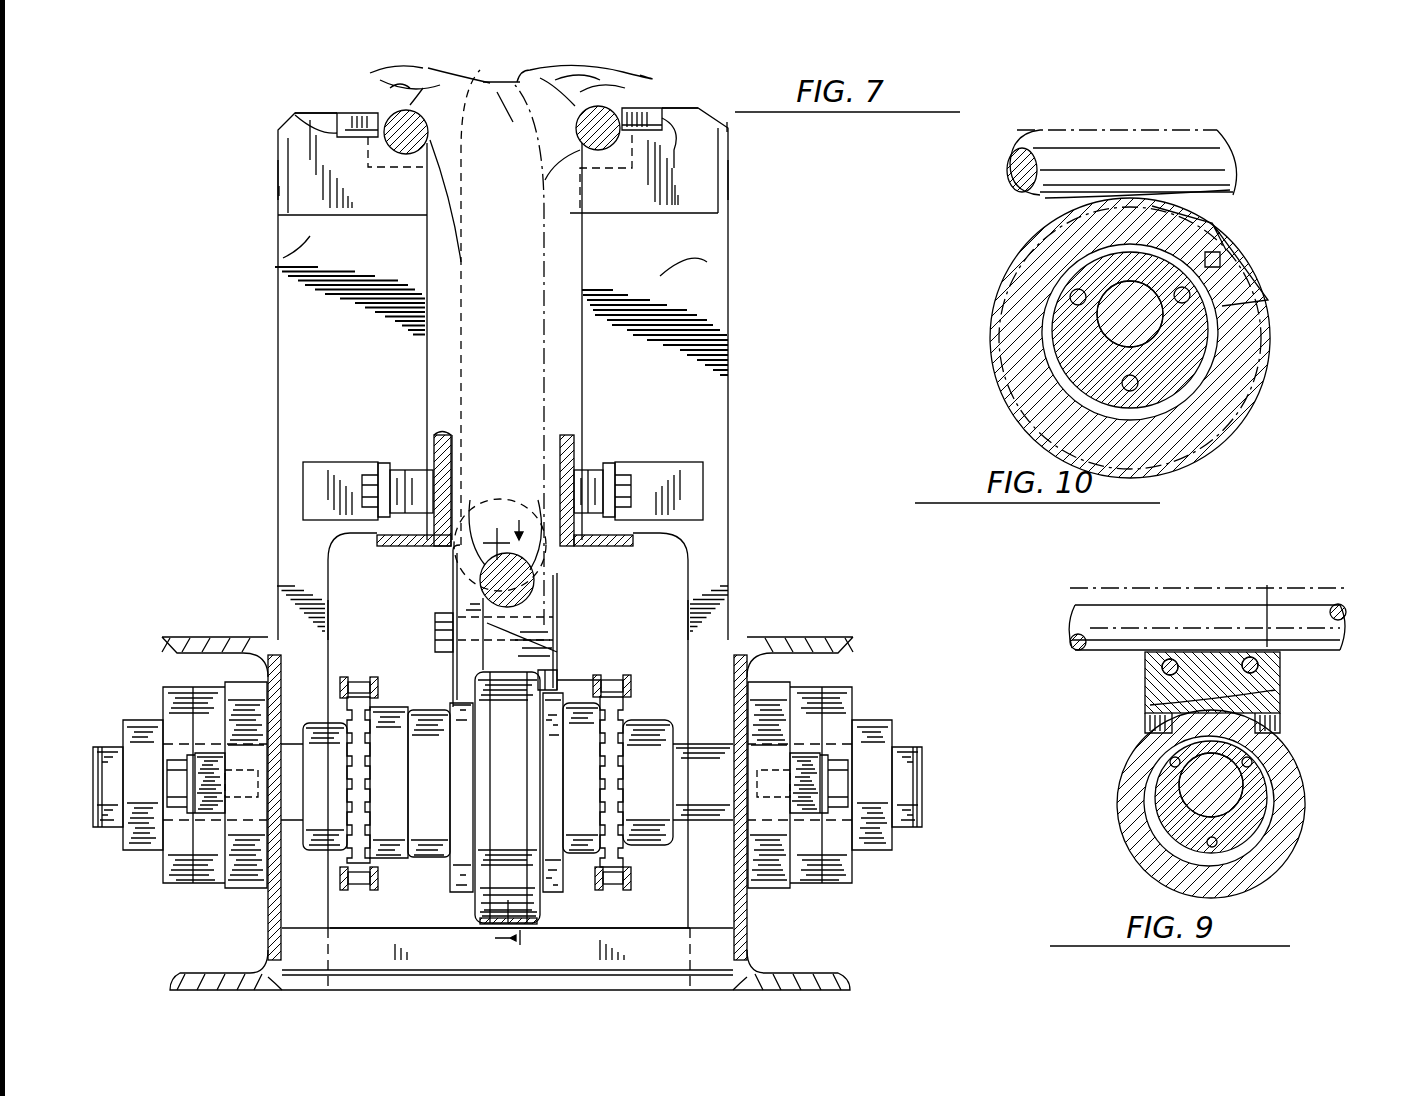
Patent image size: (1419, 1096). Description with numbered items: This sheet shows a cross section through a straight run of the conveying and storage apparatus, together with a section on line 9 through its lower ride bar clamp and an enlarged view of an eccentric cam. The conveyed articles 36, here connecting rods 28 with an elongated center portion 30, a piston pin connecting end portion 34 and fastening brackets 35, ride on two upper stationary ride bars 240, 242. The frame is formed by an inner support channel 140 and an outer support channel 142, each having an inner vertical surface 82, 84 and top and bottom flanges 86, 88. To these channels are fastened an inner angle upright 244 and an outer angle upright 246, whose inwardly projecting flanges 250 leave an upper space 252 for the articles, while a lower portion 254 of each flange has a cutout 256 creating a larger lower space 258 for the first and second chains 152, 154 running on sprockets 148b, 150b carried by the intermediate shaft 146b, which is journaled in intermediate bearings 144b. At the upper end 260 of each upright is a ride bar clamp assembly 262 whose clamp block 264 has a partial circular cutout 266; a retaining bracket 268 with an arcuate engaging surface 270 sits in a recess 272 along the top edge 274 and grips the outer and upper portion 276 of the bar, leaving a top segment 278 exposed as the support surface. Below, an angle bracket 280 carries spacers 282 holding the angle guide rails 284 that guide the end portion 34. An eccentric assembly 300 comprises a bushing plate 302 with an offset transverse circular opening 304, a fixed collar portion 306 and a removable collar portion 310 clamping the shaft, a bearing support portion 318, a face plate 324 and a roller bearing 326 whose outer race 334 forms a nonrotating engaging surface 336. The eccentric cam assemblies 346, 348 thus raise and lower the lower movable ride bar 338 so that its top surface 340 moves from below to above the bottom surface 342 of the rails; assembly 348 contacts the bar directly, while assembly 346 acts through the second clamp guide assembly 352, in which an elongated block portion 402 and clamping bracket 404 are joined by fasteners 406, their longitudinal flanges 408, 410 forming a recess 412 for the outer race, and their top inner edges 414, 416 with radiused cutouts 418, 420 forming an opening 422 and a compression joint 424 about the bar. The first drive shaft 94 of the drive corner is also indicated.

In FIG. 7, the section line 9— 9 is at (511, 740).
In FIG. 7, the automotive connecting rod 28 is at (470, 240).
In FIG. 7, the elongated center portion 30 is at (528, 382).
In FIG. 7, the piston pin connecting end portion 34 is at (505, 535).
In FIG. 7, the fastening bracket 35 is at (515, 117).
In FIG. 7, the article 36 is at (484, 268).
In FIG. 7, the inner vertical surface 82 is at (735, 905).
In FIG. 7, the inner vertical surface 84 is at (285, 910).
In FIG. 7, the top flange 86 is at (795, 640).
In FIG. 7, the bottom flange 88 is at (758, 985).
In FIG. 10, the first drive shaft 94 is at (1107, 312).
In FIG. 7, the inner support channel 140 is at (800, 973).
In FIG. 7, the outer support channel 142 is at (225, 973).
In FIG. 7, the intermediate bearing 144b is at (835, 690).
In FIG. 7, the intermediate shaft 146b is at (920, 775).
In FIG. 9, the intermediate shaft 146b is at (1195, 795).
In FIG. 7, the single chain sprocket 148b is at (630, 860).
In FIG. 7, the single chain sprocket 150b is at (340, 878).
In FIG. 7, the first single chain 152 is at (328, 684).
In FIG. 7, the second single chain 154 is at (640, 680).
In FIG. 7, the ride bar 240 is at (600, 112).
In FIG. 7, the ride bar 242 is at (390, 112).
In FIG. 7, the inner angle upright 244 is at (725, 378).
In FIG. 7, the outer angle upright 246 is at (290, 390).
In FIG. 7, the flange 250 is at (511, 248).
In FIG. 7, the upper space 252 is at (580, 288).
In FIG. 7, the lower portion 254 is at (718, 590).
In FIG. 7, the cutout 256 is at (688, 625).
In FIG. 7, the lower space 258 is at (625, 641).
In FIG. 7, the upper end 260 is at (735, 162).
In FIG. 7, the ride bar clamp assembly 262 is at (278, 192).
In FIG. 7, the clamp block 264 is at (652, 210).
In FIG. 7, the partial circular cutout 266 is at (605, 148).
In FIG. 7, the retaining bracket 268 is at (703, 92).
In FIG. 7, the engaging surface 270 is at (640, 110).
In FIG. 7, the recess 272 is at (674, 152).
In FIG. 7, the top edge 274 is at (692, 108).
In FIG. 7, the outer and upper portion 276 is at (430, 125).
In FIG. 7, the top segment 278 is at (492, 91).
In FIG. 7, the angle bracket 280 is at (675, 468).
In FIG. 7, the spacer 282 is at (592, 470).
In FIG. 7, the angle guide rail 284 is at (480, 440).
In FIG. 7, the eccentric assembly 300 is at (478, 930).
In FIG. 9, the eccentric assembly 300 is at (1190, 790).
In FIG. 7, the bushing plate 302 is at (465, 932).
In FIG. 9, the transverse circular opening 304 is at (1250, 775).
In FIG. 7, the fixed outer semi-circular collar portion 306 is at (370, 860).
In FIG. 7, the removable collar portion 310 is at (415, 725).
In FIG. 9, the circular bearing support portion 318 is at (1260, 800).
In FIG. 7, the circular face plate 324 is at (550, 890).
In FIG. 7, the roller bearing 326 is at (535, 935).
In FIG. 10, the roller bearing 326 is at (1215, 405).
In FIG. 9, the roller bearing 326 is at (1145, 868).
In FIG. 7, the outer race 334 is at (495, 928).
In FIG. 10, the outer race 334 is at (1000, 368).
In FIG. 9, the outer race 334 is at (1292, 858).
In FIG. 10, the nonrotating engaging surface 336 is at (1240, 190).
In FIG. 9, the nonrotating engaging surface 336 is at (1278, 692).
In FIG. 7, the lower movable ride bar 338 is at (495, 540).
In FIG. 10, the lower movable ride bar 338 is at (1210, 160).
In FIG. 9, the lower movable ride bar 338 is at (1345, 618).
In FIG. 7, the top surface 340 is at (512, 500).
In FIG. 7, the bottom surface 342 is at (630, 548).
In FIG. 7, the eccentric cam assembly 346 is at (540, 925).
In FIG. 9, the eccentric cam assembly 346 is at (1275, 882).
In FIG. 10, the eccentric cam assembly 348 is at (1268, 372).
In FIG. 7, the second clamp guide assembly 352 is at (570, 620).
In FIG. 9, the second clamp guide assembly 352 is at (1280, 672).
In FIG. 7, the elongated block portion 402 is at (548, 590).
In FIG. 9, the elongated block portion 402 is at (1212, 682).
In FIG. 7, the clamping bracket 404 is at (453, 672).
In FIG. 7, the fastener 406 is at (450, 617).
In FIG. 9, the fastener 406 is at (1158, 680).
In FIG. 7, the longitudinal flange 408 is at (574, 792).
In FIG. 7, the longitudinal flange 410 is at (445, 700).
In FIG. 9, the longitudinal flange 410 is at (1148, 722).
In FIG. 7, the recess 412 is at (600, 692).
In FIG. 7, the top inner edge 414 is at (540, 560).
In FIG. 7, the top inner edge 416 is at (462, 580).
In FIG. 7, the elongated radiused cutout 418 is at (540, 585).
In FIG. 9, the elongated radiused cutout 418 is at (1145, 655).
In FIG. 7, the elongated radiused cutout 420 is at (455, 612).
In FIG. 7, the opening 422 is at (505, 580).
In FIG. 7, the compression joint 424 is at (556, 660).
In FIG. 9, the compression joint 424 is at (1255, 603).